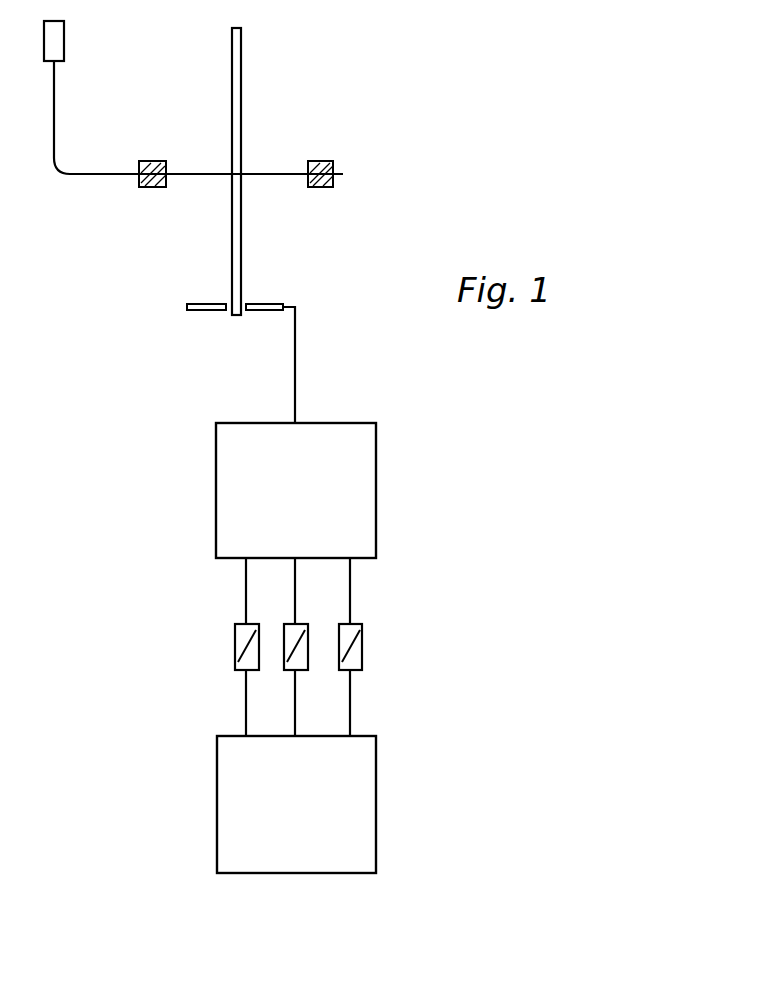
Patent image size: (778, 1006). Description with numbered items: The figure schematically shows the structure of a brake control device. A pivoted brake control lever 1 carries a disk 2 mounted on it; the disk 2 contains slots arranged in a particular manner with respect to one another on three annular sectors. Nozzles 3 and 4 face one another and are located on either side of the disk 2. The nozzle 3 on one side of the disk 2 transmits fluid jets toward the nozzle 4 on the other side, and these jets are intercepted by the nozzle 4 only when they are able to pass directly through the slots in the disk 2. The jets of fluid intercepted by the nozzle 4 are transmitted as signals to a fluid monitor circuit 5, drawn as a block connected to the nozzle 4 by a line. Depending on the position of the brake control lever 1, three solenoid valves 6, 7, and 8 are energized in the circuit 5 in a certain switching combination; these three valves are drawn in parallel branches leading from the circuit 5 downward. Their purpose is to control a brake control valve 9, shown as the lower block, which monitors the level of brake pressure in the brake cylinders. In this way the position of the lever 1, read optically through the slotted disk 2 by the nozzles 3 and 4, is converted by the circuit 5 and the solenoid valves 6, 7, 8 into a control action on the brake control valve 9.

The brake control lever 1 is at (56, 40).
The disk 2 is at (237, 66).
The nozzle 3 is at (203, 310).
The nozzle 4 is at (265, 305).
The fluid monitor circuit 5 is at (362, 478).
The solenoid valve 6 is at (235, 642).
The solenoid valve 7 is at (288, 655).
The solenoid valve 8 is at (362, 652).
The brake control valve 9 is at (362, 800).